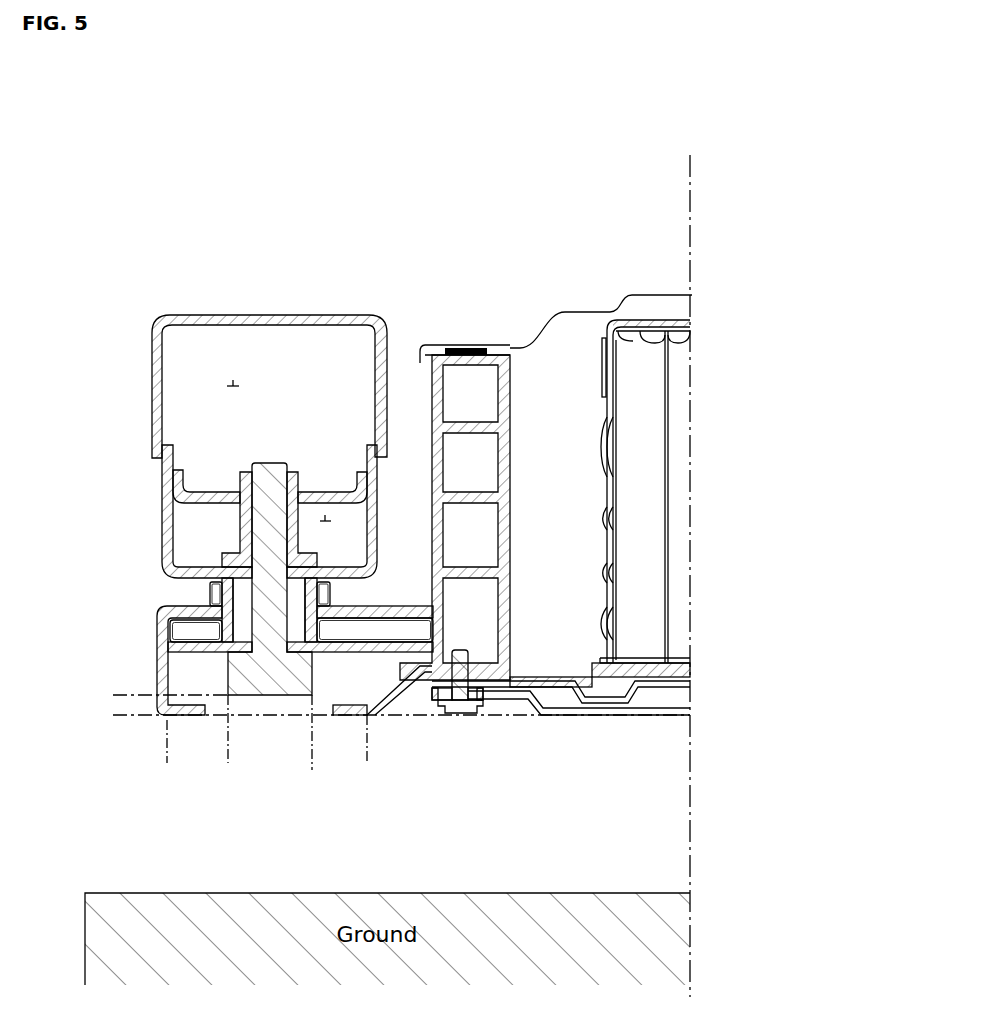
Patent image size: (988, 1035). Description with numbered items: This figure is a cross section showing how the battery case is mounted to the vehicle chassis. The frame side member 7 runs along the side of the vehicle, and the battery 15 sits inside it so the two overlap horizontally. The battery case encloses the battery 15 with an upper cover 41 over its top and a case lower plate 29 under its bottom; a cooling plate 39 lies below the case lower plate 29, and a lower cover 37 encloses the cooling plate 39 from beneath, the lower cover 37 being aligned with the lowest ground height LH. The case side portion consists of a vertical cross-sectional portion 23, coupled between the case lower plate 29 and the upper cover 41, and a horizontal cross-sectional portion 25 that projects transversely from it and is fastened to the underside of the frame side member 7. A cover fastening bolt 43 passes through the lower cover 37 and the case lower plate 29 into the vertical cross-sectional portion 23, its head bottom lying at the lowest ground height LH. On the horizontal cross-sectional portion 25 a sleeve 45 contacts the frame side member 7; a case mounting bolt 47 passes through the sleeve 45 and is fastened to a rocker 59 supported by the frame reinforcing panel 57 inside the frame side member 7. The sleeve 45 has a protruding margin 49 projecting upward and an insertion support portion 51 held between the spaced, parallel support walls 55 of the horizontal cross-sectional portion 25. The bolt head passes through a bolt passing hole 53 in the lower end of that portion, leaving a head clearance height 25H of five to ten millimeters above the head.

The frame side member 7 is at (303, 315).
The battery 15 is at (640, 490).
The vertical cross-sectional portion 23 is at (510, 422).
The horizontal cross-sectional portion 25 is at (157, 667).
The head clearance height 25H is at (120, 665).
The case lower plate 29 is at (650, 672).
The lower cover 37 is at (620, 712).
The cooling plate 39 is at (640, 692).
The upper cover 41 is at (580, 313).
The cover fastening bolt 43 is at (455, 713).
The sleeve 45 is at (402, 595).
The case mounting bolt 47 is at (267, 472).
The protruding margin 49 is at (210, 593).
The insertion support portion 51 is at (170, 636).
The bolt passing hole 53 is at (205, 708).
The support walls 55 is at (387, 647).
The frame reinforcing panel 57 is at (215, 488).
The rocker 59 is at (243, 470).
The lowest ground height LH is at (607, 715).